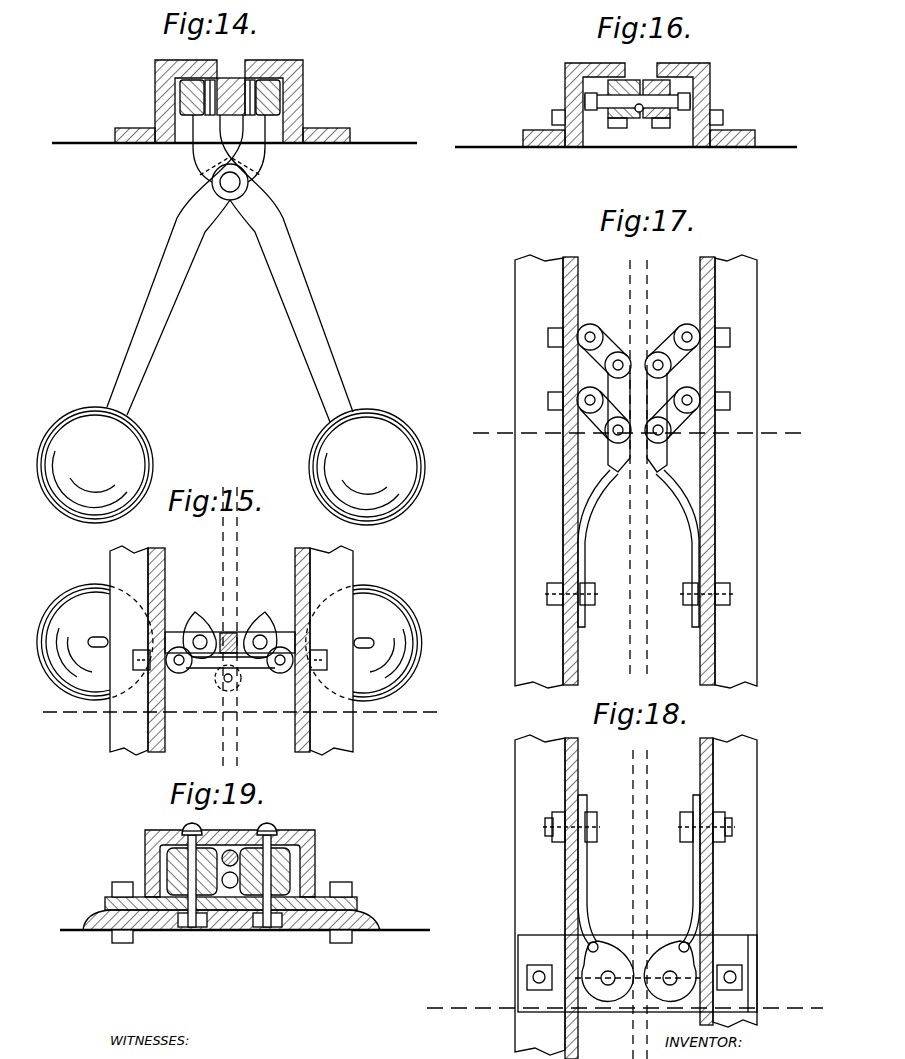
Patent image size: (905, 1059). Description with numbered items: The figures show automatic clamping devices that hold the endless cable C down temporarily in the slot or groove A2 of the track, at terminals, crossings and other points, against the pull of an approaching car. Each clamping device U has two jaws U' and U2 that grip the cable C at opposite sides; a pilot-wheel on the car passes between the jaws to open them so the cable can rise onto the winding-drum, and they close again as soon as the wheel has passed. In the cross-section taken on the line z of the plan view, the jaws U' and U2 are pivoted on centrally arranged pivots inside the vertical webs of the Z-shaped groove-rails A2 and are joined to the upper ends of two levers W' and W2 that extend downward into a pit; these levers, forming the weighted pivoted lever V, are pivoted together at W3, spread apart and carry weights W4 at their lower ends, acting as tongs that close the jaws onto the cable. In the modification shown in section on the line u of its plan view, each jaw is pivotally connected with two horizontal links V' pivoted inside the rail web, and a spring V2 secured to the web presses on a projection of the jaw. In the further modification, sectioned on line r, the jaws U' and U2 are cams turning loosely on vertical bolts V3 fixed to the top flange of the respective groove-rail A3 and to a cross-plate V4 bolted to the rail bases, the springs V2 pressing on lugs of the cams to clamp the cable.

In FIG. 14, the slot or groove / Z-shaped groove-rail A2 is at (243, 58).
In FIG. 15, the slot or groove / Z-shaped groove-rail A2 is at (230, 684).
In FIG. 19, the slot or groove / Z-shaped groove-rail A2 is at (232, 848).
In FIG. 16, the slot or groove / Z-shaped groove-rail A2 is at (643, 133).
In FIG. 17, the slot or groove / Z-shaped groove-rail A2 is at (640, 624).
In FIG. 18, the slot or groove / Z-shaped groove-rail A2 is at (639, 804).
In FIG. 14, the groove-rail A3 is at (155, 83).
In FIG. 15, the groove-rail A3 is at (90, 766).
In FIG. 19, the groove-rail A3 is at (145, 848).
In FIG. 16, the groove-rail A3 is at (565, 91).
In FIG. 17, the groove-rail A3 is at (520, 504).
In FIG. 18, the groove-rail A3 is at (776, 771).
In FIG. 14, the cable C is at (231, 78).
In FIG. 15, the cable C is at (245, 628).
In FIG. 19, the cable C is at (200, 885).
In FIG. 17, the cable C is at (652, 470).
In FIG. 18, the cable C is at (643, 855).
In FIG. 14, the clamping device U is at (216, 166).
In FIG. 15, the clamping device U is at (229, 614).
In FIG. 19, the clamping device U is at (257, 893).
In FIG. 16, the clamping device U is at (660, 74).
In FIG. 17, the clamping device U is at (663, 462).
In FIG. 18, the clamping device U is at (672, 920).
In FIG. 15, the jaw U' is at (195, 624).
In FIG. 19, the jaw U' is at (185, 911).
In FIG. 16, the jaw U' is at (616, 74).
In FIG. 15, the jaw U2 is at (262, 623).
In FIG. 19, the jaw U2 is at (287, 883).
In FIG. 16, the jaw U2 is at (680, 74).
In FIG. 14, the weighted pivoted lever V is at (231, 268).
In FIG. 14, the link V' is at (193, 73).
In FIG. 16, the link V' is at (626, 147).
In FIG. 17, the link V' is at (613, 382).
In FIG. 18, the link V' is at (608, 993).
In FIG. 14, the spring V2 is at (270, 78).
In FIG. 17, the spring V2 is at (592, 500).
In FIG. 18, the spring V2 is at (583, 892).
In FIG. 19, the bolt V3 is at (182, 830).
In FIG. 17, the bolt V3 is at (655, 453).
In FIG. 18, the bolt V3 is at (588, 948).
In FIG. 19, the cross-plate V4 is at (357, 902).
In FIG. 18, the cross-plate V4 is at (527, 948).
In FIG. 15, the pivot W is at (240, 679).
In FIG. 14, the lever W' is at (166, 307).
In FIG. 14, the lever W2 is at (277, 263).
In FIG. 14, the pivot W3 is at (237, 180).
In FIG. 14, the weight W4 is at (143, 433).
In FIG. 15, the weight W4 is at (229, 642).
In FIG. 17, the section line u u is at (640, 443).
In FIG. 18, the section line r- r is at (625, 1011).
In FIG. 15, the section line z z is at (240, 715).